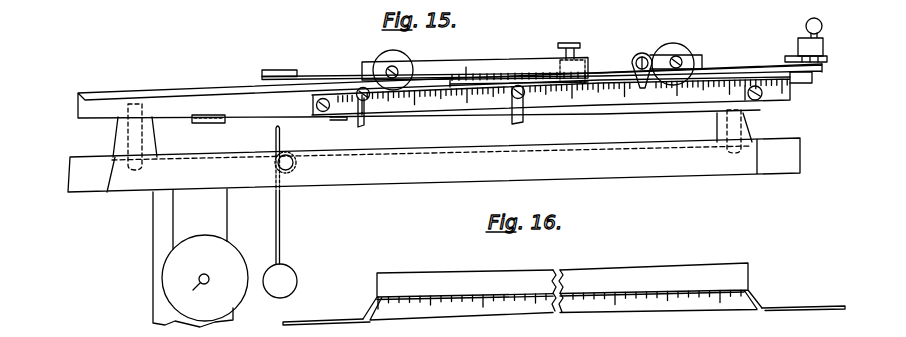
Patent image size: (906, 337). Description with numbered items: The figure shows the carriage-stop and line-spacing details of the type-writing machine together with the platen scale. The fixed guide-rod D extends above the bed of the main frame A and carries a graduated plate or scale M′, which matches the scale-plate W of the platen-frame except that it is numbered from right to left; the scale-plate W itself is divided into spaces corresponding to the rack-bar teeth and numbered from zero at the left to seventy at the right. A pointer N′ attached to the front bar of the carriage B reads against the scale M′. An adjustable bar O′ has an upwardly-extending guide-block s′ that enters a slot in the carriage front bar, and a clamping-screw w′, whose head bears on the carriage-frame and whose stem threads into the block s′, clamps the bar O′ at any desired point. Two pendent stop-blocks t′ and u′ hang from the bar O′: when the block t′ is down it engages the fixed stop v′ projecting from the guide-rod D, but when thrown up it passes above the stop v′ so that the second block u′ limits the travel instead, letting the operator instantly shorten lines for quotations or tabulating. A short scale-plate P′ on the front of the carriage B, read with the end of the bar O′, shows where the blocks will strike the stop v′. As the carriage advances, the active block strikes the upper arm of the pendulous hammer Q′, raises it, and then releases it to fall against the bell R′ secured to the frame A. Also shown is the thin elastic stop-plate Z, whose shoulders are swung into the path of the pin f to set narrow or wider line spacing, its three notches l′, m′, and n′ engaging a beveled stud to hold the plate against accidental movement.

In FIG. 15, the guide-rod D is at (190, 88).
In FIG. 15, the frame A is at (628, 177).
In FIG. 15, the fixed stop v′ is at (207, 124).
In FIG. 15, the graduated plate or scale M′ is at (592, 106).
In FIG. 15, the stop-block t′ is at (357, 120).
In FIG. 15, the stop-block u′ is at (513, 119).
In FIG. 15, the carriage B is at (475, 63).
In FIG. 15, the short scale-plate P′ is at (467, 56).
In FIG. 15, the adjustable bar O′ is at (490, 86).
In FIG. 15, the guide-block s′ is at (570, 62).
In FIG. 15, the clamping-screw w′ is at (577, 42).
In FIG. 15, the pin f is at (380, 53).
In FIG. 15, the pointer N′ is at (645, 45).
In FIG. 15, the stop-plate Z is at (790, 56).
In FIG. 15, the notch or recess n′ is at (818, 63).
In FIG. 15, the notch or recess l′ is at (803, 64).
In FIG. 15, the notch or recess m′ is at (810, 64).
In FIG. 15, the bell R′ is at (205, 278).
In FIG. 15, the pendulous hammer Q′ is at (287, 277).
In FIG. 16, the scale-plate W is at (640, 272).